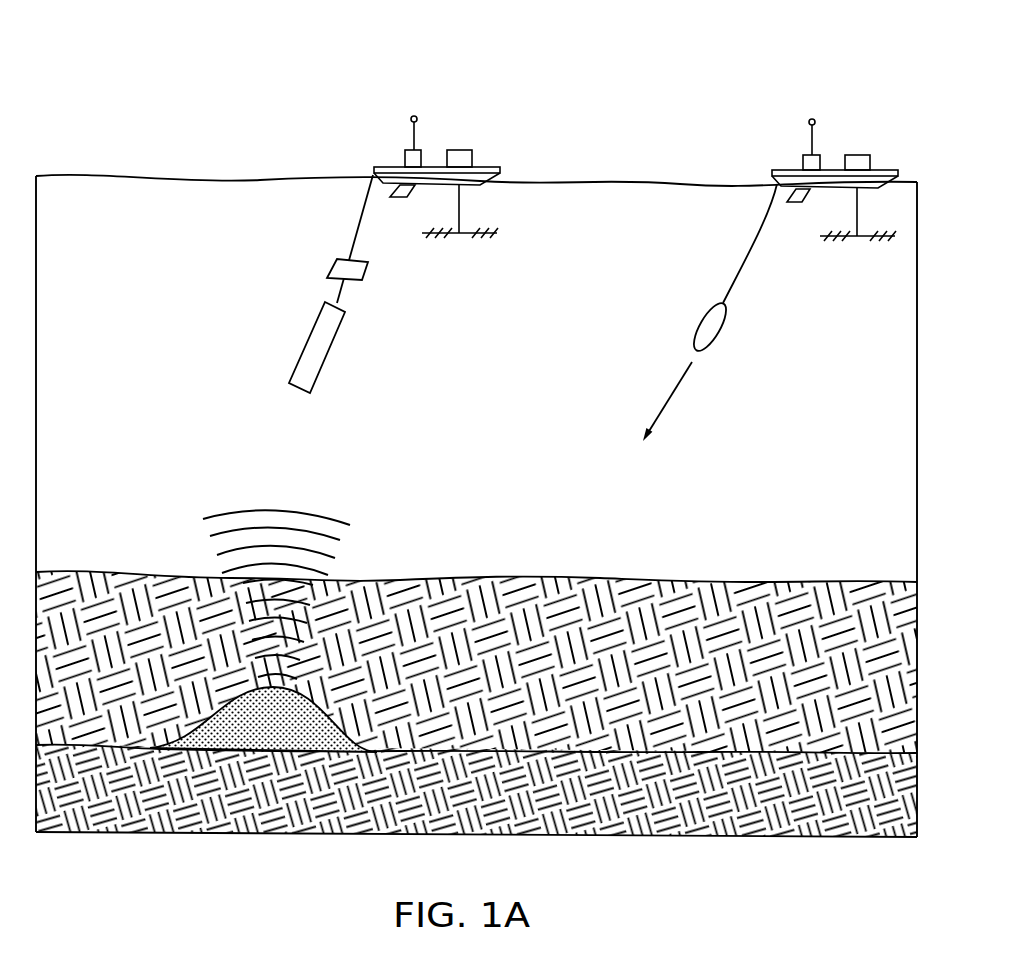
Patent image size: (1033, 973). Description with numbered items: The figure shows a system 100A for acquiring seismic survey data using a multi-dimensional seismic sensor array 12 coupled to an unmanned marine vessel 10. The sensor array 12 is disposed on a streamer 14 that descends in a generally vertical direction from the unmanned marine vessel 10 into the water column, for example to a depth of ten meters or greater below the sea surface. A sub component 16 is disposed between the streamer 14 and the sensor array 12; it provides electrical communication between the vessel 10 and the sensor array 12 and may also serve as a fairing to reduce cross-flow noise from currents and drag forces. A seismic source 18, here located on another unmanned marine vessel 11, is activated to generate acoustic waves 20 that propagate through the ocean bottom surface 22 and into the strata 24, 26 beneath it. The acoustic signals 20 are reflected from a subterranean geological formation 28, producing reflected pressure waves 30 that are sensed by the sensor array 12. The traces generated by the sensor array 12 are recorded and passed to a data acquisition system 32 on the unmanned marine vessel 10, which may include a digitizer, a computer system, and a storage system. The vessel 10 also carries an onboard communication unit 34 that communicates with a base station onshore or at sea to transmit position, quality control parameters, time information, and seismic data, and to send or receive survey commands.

The system 100A is at (172, 34).
The unmanned marine vessel 10 is at (487, 167).
The unmanned marine vessel 11 is at (885, 168).
The multi-dimensional seismic sensor array 12 is at (307, 335).
The streamer 14 is at (342, 297).
The sub component 16 is at (332, 267).
The seismic source 18 is at (700, 322).
The acoustic waves 20 is at (675, 388).
The ocean bottom surface 22 is at (652, 578).
The stratum 24 is at (450, 715).
The stratum 26 is at (485, 805).
The formation 28 is at (290, 732).
The pressure waves 30 is at (313, 498).
The data acquisition system 32 is at (460, 150).
The communication unit 34 is at (410, 138).